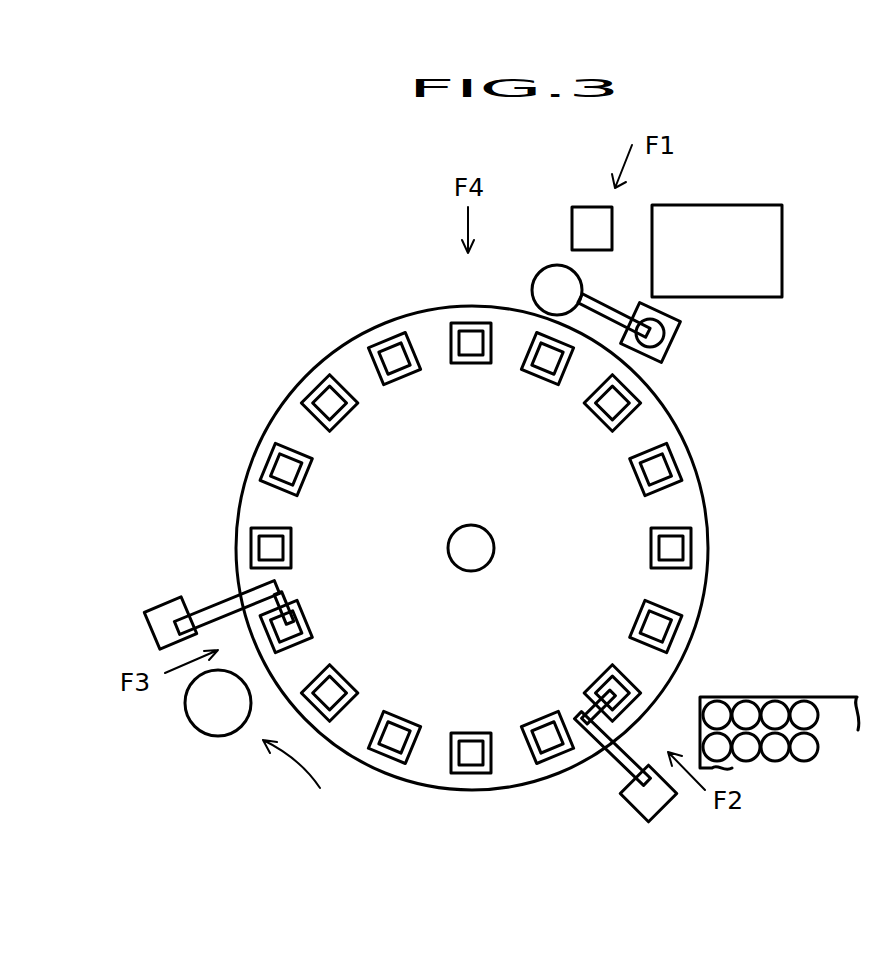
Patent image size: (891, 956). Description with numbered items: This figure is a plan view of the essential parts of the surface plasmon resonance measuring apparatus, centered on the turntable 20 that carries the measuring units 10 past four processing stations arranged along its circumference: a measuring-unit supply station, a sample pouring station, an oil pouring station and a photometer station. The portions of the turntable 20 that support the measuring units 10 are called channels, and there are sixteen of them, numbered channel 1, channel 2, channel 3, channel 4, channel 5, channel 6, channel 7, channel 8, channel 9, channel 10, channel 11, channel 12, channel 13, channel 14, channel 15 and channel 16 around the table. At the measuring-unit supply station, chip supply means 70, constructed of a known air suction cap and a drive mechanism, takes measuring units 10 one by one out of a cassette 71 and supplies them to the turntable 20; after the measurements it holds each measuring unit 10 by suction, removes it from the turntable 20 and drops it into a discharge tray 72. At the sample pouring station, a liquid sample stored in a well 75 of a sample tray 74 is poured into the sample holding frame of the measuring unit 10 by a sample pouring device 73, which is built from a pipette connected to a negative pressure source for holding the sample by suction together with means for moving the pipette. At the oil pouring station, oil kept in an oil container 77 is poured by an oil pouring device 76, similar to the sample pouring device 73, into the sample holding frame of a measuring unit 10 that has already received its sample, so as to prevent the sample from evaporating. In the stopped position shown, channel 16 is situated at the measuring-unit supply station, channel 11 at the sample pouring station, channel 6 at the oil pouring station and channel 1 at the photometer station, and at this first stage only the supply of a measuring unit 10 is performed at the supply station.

The channel 1 is at (471, 365).
The channel 2 is at (397, 376).
The channel 3 is at (340, 415).
The channel 4 is at (303, 472).
The channel 5 is at (292, 548).
The channel 6 is at (303, 623).
The channel 7 is at (340, 681).
The channel 8 is at (397, 718).
The channel 9 is at (471, 730).
The measuring unit 10 is at (732, 465).
The channel 11 is at (599, 679).
The channel 12 is at (636, 620).
The channel 13 is at (649, 548).
The channel 14 is at (636, 476).
The channel 15 is at (599, 418).
The channel 16 is at (541, 378).
The turntable 20 is at (690, 593).
The chip supply means 70 is at (667, 337).
The cassette 71 is at (572, 222).
The discharge tray 72 is at (760, 210).
The sample pouring device 73 is at (618, 765).
The sample tray 74 is at (837, 697).
The well 75 is at (808, 745).
The oil pouring device 76 is at (212, 607).
The oil container 77 is at (203, 728).